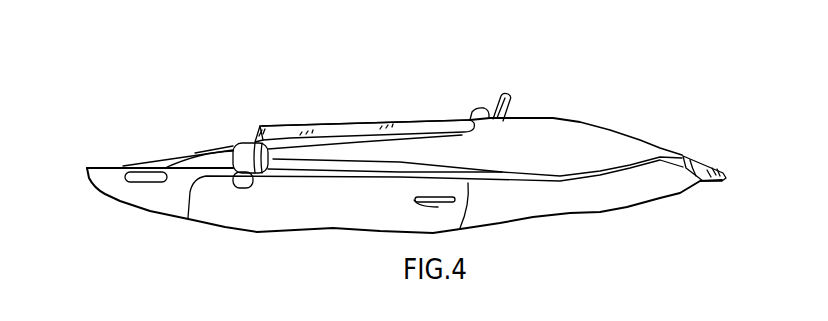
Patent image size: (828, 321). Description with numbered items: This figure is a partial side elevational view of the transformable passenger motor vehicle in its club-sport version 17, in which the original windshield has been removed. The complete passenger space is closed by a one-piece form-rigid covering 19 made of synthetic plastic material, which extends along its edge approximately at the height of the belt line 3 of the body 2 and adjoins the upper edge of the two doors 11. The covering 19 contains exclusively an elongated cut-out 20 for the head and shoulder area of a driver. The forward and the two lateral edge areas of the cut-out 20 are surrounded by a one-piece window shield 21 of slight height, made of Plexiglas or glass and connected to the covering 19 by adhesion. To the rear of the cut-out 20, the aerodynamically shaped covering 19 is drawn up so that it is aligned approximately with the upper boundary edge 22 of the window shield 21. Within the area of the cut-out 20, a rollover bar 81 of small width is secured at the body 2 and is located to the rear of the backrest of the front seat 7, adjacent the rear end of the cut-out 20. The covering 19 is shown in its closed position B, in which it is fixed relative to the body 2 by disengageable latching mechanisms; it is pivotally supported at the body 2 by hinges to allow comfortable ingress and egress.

The body 2 is at (141, 158).
The belt line 3 is at (540, 183).
The front seat 7 is at (481, 114).
The door 11 is at (282, 220).
The club-sport version 17 is at (256, 122).
The covering 19 is at (617, 130).
The cut-out 20 is at (434, 118).
The window shield 21 is at (347, 130).
The upper boundary edge 22 is at (393, 122).
The rollover bar 81 is at (503, 93).
The closed position B is at (553, 118).